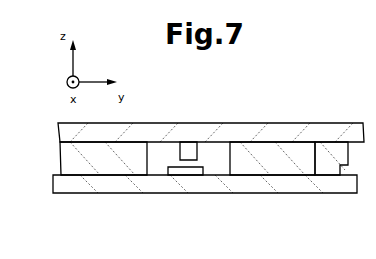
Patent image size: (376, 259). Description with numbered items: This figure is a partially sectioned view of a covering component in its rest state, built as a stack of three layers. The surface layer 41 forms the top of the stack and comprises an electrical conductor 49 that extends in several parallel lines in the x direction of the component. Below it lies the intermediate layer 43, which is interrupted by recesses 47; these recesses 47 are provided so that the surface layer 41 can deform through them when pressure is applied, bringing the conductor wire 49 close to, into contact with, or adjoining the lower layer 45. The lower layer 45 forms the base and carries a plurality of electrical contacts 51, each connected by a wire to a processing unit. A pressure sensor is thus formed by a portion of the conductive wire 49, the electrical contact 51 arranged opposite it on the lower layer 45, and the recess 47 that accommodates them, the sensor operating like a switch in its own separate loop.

The surface layer 41 is at (265, 123).
The intermediate layer 43 is at (303, 142).
The lower layer 45 is at (250, 177).
The recess 47 is at (328, 142).
The electrical conductor 49 is at (190, 142).
The electrical contact 51 is at (182, 175).